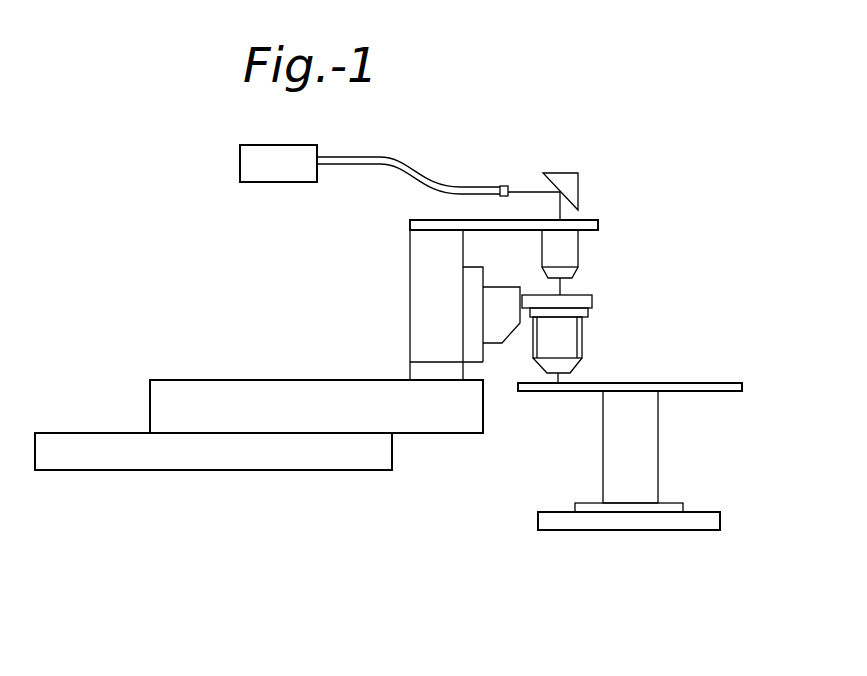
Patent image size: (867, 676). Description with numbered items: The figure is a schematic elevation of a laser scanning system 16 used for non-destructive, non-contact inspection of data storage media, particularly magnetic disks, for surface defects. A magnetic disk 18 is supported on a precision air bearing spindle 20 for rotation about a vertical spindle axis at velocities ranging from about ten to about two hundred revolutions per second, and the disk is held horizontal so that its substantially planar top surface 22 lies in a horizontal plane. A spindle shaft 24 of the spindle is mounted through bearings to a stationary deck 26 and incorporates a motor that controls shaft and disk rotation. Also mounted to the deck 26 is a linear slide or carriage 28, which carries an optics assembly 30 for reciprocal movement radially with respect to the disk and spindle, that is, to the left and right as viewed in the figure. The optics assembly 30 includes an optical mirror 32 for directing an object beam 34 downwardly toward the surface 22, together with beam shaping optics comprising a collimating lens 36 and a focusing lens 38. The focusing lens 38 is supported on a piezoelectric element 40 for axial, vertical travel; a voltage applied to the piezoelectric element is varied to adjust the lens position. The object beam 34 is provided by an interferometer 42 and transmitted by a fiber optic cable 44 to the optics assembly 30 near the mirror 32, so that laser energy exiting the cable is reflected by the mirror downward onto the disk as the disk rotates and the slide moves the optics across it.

The laser scanning system 16 is at (200, 267).
The magnetic disk 18 is at (742, 390).
The precision air bearing spindle 20 is at (605, 474).
The top surface 22 is at (737, 385).
The spindle shaft 24 is at (658, 443).
The stationary deck 26 is at (170, 470).
The linear slide 28 is at (280, 380).
The optics assembly 30 is at (413, 295).
The optical mirror 32 is at (580, 190).
The object beam 34 is at (523, 190).
The collimating lens 36 is at (580, 248).
The focusing lens 38 is at (585, 325).
The piezoelectric element 40 is at (583, 355).
The interferometer 42 is at (262, 145).
The fiber optic cable 44 is at (388, 157).